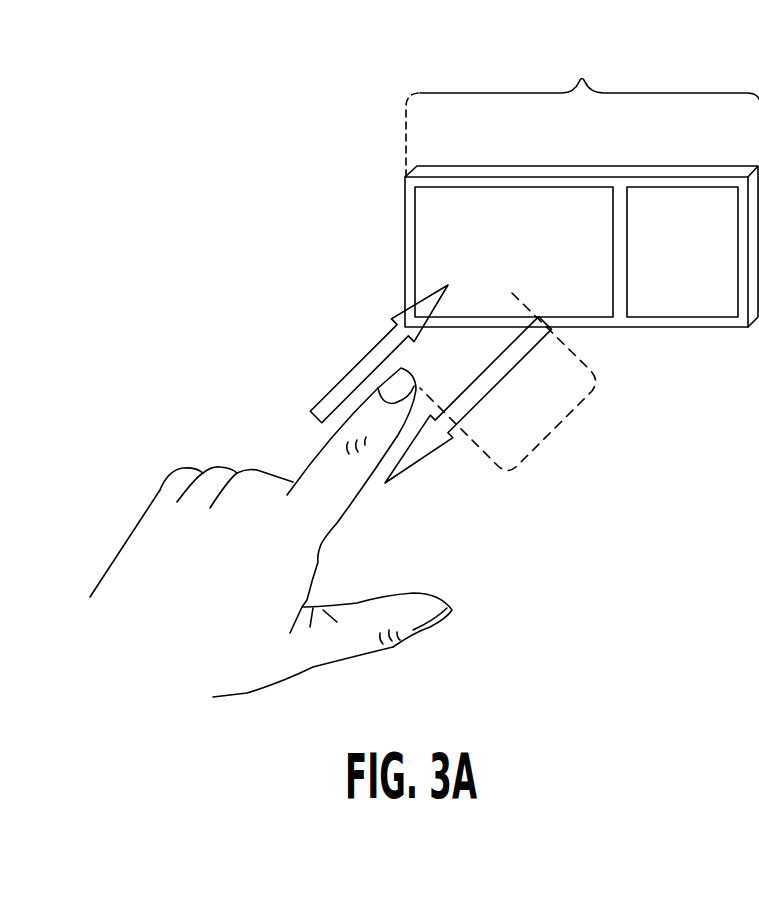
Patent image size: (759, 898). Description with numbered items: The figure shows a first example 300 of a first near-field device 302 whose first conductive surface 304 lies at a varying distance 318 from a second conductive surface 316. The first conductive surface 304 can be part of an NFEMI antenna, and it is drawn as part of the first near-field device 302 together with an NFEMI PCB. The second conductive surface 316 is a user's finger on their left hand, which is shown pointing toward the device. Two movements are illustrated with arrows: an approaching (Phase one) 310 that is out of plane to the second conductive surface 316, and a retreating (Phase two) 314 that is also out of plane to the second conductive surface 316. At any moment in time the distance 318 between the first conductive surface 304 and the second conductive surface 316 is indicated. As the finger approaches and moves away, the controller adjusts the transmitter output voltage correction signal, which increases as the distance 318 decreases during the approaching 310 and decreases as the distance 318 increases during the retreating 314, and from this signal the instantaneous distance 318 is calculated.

The first example 300 is at (209, 176).
The first near-field device 302 is at (582, 183).
The first conductive surface 304 is at (437, 242).
The approaching (Phase 1) 310 is at (323, 403).
The retreating (Phase 2) 314 is at (428, 460).
The second conductive surface 316 is at (160, 490).
The distance 318 is at (555, 432).